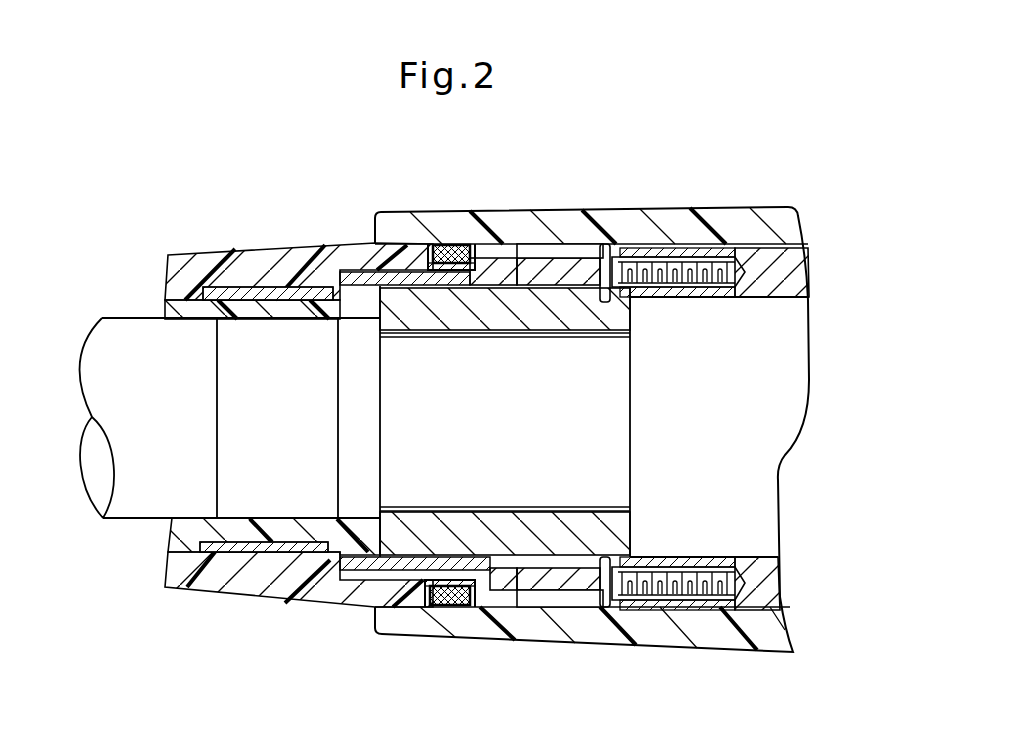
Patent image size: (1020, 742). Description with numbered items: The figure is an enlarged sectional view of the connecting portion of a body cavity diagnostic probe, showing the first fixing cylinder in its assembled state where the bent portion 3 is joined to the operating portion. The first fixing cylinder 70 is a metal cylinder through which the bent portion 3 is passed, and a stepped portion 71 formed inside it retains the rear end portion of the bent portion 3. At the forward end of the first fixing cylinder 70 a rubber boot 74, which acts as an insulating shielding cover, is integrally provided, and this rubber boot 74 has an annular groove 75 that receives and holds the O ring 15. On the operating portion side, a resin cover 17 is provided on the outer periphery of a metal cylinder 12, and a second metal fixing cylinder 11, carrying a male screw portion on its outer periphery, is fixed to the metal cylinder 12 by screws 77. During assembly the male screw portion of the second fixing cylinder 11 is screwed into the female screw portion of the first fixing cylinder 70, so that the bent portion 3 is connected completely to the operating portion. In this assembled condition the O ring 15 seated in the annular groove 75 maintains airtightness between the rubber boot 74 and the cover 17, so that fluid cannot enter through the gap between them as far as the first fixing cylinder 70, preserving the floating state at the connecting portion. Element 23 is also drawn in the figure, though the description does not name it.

The bent portion 3 is at (291, 420).
The second metal fixing cylinder 11 is at (495, 323).
The metal cylinder 12 is at (742, 299).
The O ring 15 is at (453, 256).
The resin cover 17 is at (634, 228).
The spacer ring 23 is at (490, 268).
The first fixing cylinder 70 is at (542, 272).
The stepped portion 71 is at (347, 553).
The rubber boot 74 is at (247, 258).
The annular groove 75 is at (445, 262).
The screws 77 is at (703, 268).